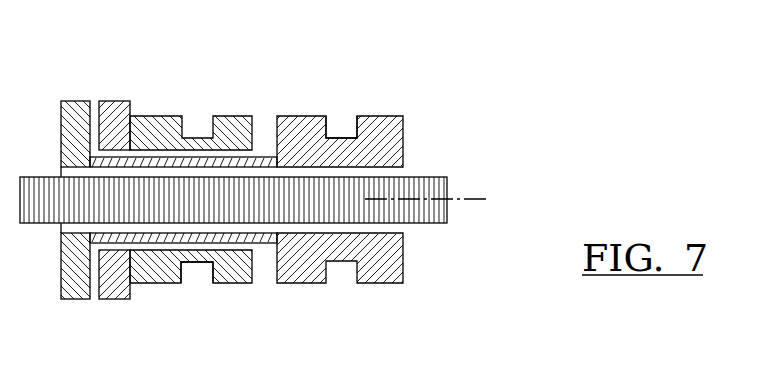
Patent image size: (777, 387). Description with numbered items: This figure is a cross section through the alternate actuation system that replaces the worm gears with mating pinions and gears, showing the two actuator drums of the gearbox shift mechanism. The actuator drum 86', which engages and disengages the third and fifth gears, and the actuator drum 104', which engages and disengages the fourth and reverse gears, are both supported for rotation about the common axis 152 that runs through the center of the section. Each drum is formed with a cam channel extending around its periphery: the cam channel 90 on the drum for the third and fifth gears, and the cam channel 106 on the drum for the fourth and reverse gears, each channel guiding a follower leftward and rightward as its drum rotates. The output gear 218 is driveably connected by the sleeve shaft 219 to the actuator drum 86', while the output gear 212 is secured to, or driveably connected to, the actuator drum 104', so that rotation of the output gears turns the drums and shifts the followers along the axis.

The output gear 218 is at (78, 110).
The output gear 212 is at (113, 117).
The sleeve shaft 219 is at (262, 243).
The actuator drum 86' is at (368, 124).
The cam channel 90 is at (341, 130).
The actuator drum 104' is at (202, 306).
The cam channel 106 is at (194, 266).
The axis 152 is at (460, 202).